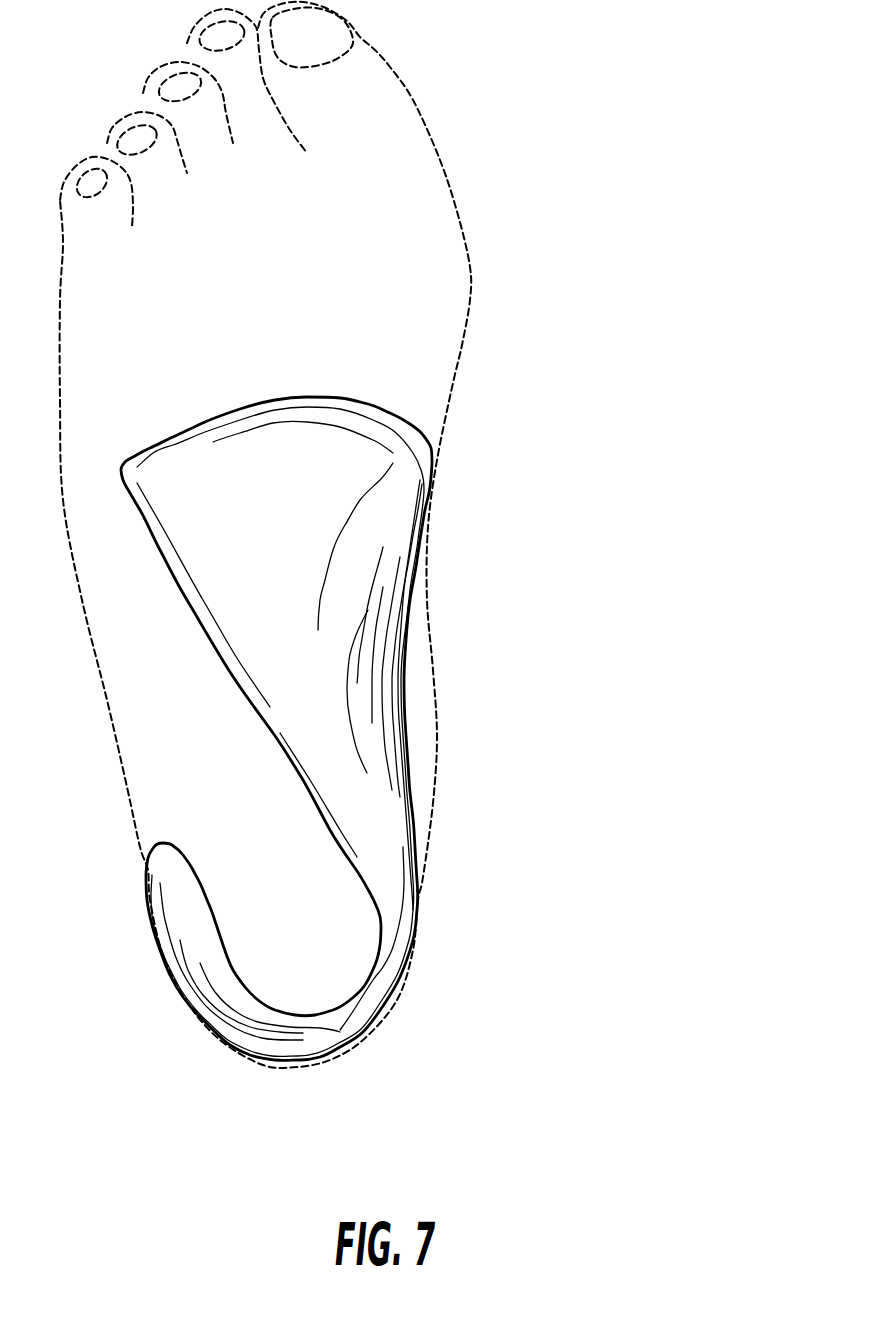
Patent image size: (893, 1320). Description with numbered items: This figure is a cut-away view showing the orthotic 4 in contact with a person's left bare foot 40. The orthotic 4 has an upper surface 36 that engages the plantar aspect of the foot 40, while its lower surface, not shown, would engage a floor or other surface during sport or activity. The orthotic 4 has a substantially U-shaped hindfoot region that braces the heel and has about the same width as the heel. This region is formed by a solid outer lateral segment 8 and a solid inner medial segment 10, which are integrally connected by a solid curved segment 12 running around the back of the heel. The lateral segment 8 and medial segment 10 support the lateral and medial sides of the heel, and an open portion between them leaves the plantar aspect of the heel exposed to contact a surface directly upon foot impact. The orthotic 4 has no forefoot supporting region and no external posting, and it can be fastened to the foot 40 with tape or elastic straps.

The left foot 40 is at (578, 154).
The orthotic 4 is at (462, 828).
The upper surface 36 is at (330, 667).
The lateral segment 8 is at (173, 910).
The medial segment 10 is at (397, 950).
The curved segment 12 is at (310, 1037).